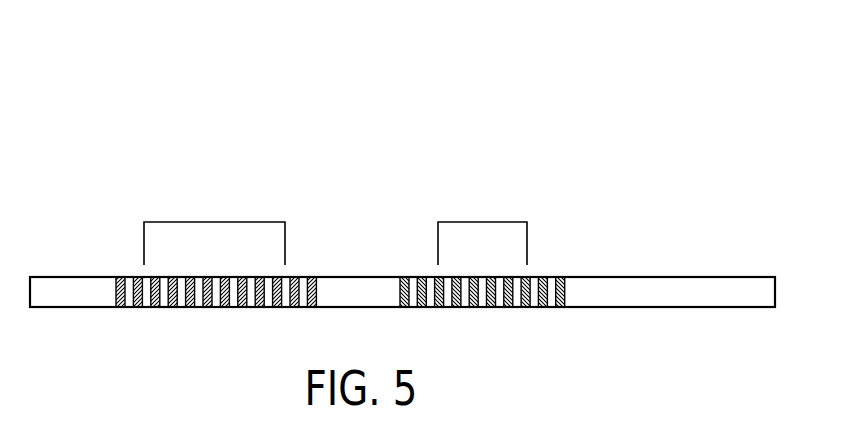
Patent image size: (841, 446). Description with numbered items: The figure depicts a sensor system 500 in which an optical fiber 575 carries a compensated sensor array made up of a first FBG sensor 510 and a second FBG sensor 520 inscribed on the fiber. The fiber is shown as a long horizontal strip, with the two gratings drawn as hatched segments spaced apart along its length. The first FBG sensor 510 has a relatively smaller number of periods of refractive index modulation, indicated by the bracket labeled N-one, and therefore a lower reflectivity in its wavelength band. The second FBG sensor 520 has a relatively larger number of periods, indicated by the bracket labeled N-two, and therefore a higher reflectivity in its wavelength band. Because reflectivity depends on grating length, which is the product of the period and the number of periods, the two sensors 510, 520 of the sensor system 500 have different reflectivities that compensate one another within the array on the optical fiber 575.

The sensor system 500 is at (380, 95).
The first FBG sensor 510 is at (212, 152).
The second FBG sensor 520 is at (489, 156).
The optical fiber 575 is at (47, 307).